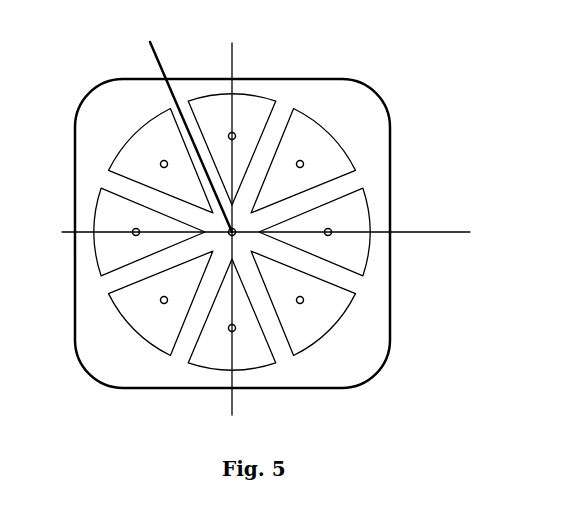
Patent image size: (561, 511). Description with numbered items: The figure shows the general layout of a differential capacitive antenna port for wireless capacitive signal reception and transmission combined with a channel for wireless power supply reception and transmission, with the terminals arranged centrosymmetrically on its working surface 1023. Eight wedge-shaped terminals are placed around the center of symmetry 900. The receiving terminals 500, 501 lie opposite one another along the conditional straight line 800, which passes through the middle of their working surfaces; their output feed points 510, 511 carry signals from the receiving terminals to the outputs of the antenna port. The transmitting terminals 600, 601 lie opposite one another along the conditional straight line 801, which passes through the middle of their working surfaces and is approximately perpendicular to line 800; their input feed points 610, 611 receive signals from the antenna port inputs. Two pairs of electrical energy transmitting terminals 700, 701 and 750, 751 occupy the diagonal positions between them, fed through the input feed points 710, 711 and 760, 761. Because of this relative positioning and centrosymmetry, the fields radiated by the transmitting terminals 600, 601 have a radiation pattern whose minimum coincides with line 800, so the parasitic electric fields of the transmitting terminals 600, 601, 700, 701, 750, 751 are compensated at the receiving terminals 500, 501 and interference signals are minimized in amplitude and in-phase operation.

The working surface 1023 is at (320, 79).
The conditional straight line 800 is at (232, 62).
The conditional straight line 801 is at (463, 232).
The center of symmetry 900 is at (174, 135).
The receiving terminal 500 is at (222, 96).
The output feed point 510 is at (232, 133).
The receiving terminal 501 is at (226, 372).
The output feed point 511 is at (234, 332).
The transmitting terminal 600 is at (100, 201).
The input feed point 610 is at (131, 233).
The transmitting terminal 601 is at (370, 250).
The input feed point 611 is at (333, 232).
The electrical energy transmitting terminal 700 is at (114, 161).
The input feed point 710 is at (164, 161).
The electrical energy transmitting terminal 701 is at (331, 134).
The input feed point 711 is at (303, 165).
The electrical energy transmitting terminal 750 is at (110, 297).
The input feed point 760 is at (161, 302).
The electrical energy transmitting terminal 751 is at (320, 338).
The input feed point 761 is at (305, 301).